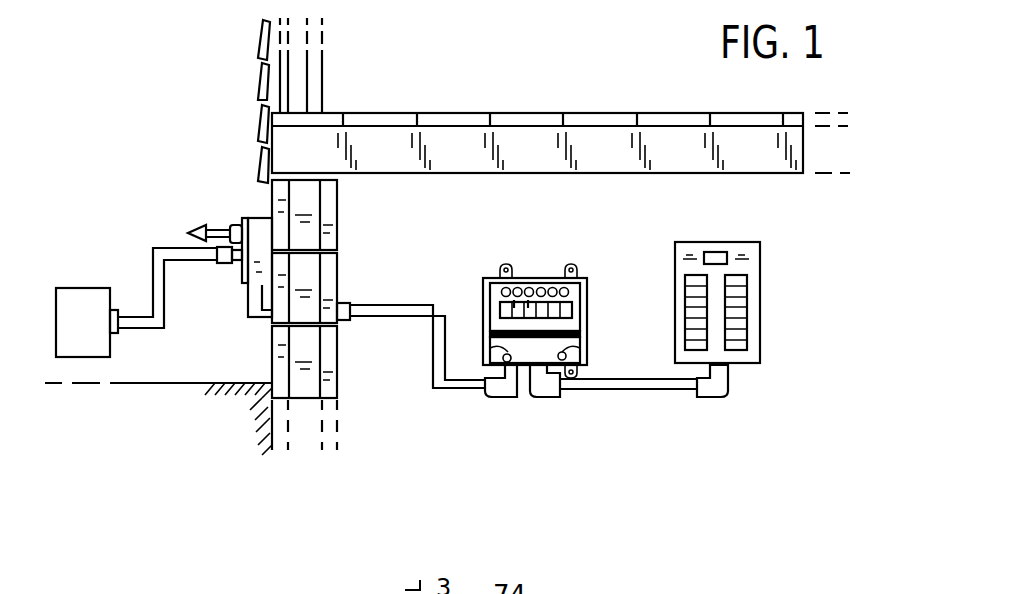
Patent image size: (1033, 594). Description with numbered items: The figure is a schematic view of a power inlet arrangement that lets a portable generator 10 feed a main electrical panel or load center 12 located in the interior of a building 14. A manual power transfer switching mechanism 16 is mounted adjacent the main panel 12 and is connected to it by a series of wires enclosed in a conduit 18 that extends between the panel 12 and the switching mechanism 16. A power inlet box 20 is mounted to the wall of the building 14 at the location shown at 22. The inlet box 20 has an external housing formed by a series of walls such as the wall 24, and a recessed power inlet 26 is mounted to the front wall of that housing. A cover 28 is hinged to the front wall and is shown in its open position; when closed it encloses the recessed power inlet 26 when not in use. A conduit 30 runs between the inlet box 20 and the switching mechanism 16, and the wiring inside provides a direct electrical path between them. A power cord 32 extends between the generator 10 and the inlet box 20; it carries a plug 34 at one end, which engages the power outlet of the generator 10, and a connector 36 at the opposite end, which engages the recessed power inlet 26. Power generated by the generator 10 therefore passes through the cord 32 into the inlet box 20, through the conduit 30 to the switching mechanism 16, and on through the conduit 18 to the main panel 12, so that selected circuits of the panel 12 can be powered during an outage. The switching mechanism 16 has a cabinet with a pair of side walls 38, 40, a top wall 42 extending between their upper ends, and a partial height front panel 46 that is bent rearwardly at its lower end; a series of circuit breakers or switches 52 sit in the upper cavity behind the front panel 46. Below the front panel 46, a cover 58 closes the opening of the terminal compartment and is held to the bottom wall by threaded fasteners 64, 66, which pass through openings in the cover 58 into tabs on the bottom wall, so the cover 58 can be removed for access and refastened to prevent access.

The portable generator 10 is at (78, 297).
The main electrical panel 12 is at (782, 259).
The building 14 is at (207, 64).
The manual power transfer switching mechanism 16 is at (618, 244).
The conduit 18 is at (660, 383).
The power inlet box 20 is at (218, 194).
The wall mounting 22 is at (273, 426).
The wall 24 is at (265, 232).
The recessed power inlet 26 is at (243, 270).
The cover 28 is at (192, 231).
The conduit 30 is at (463, 383).
The power cord 32 is at (165, 317).
The plug 34 is at (113, 333).
The connector 36 is at (223, 265).
The side wall 38 is at (487, 302).
The side wall 40 is at (583, 310).
The top wall 42 is at (543, 273).
The front panel 46 is at (580, 290).
The circuit breakers 52 is at (528, 308).
The cover 58 is at (570, 342).
The threaded fastener 64 is at (505, 353).
The threaded fastener 66 is at (575, 358).